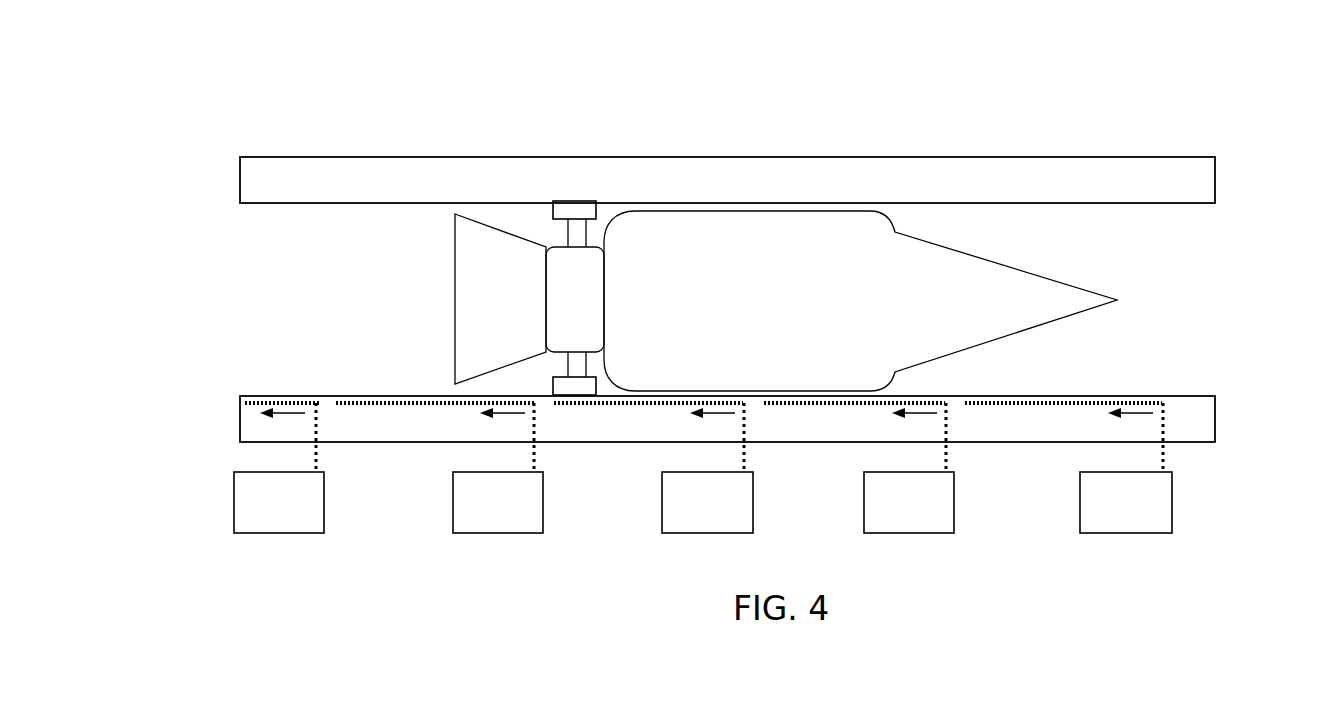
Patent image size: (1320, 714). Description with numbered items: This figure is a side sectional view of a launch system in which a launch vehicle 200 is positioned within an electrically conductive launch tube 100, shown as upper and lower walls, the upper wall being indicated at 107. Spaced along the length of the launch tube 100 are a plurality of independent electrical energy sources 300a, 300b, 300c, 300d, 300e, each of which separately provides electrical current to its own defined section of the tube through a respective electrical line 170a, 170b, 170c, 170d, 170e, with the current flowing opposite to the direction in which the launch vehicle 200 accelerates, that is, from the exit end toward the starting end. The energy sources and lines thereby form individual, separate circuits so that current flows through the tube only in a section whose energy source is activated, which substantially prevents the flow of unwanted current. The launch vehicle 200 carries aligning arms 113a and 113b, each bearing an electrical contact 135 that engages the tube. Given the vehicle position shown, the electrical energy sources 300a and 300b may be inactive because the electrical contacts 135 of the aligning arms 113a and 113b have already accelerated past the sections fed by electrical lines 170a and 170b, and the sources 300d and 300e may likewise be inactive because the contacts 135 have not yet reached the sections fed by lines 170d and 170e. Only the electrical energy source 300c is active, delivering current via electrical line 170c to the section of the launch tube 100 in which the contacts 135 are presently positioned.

The launch tube 100 is at (625, 239).
The upper track 107 is at (1213, 122).
The launch vehicle 200 is at (284, 318).
The aligning arm 113a is at (573, 231).
The aligning arm 113b is at (577, 358).
The electrical contact 135 is at (585, 208).
The electrical line 170a is at (317, 428).
The electrical line 170b is at (535, 428).
The electrical line 170c is at (745, 428).
The electrical line 170d is at (947, 428).
The electrical line 170e is at (1164, 428).
The electrical energy source 300a is at (279, 502).
The electrical energy source 300b is at (498, 502).
The electrical energy source 300c is at (707, 502).
The electrical energy source 300d is at (909, 502).
The electrical energy source 300e is at (1126, 502).